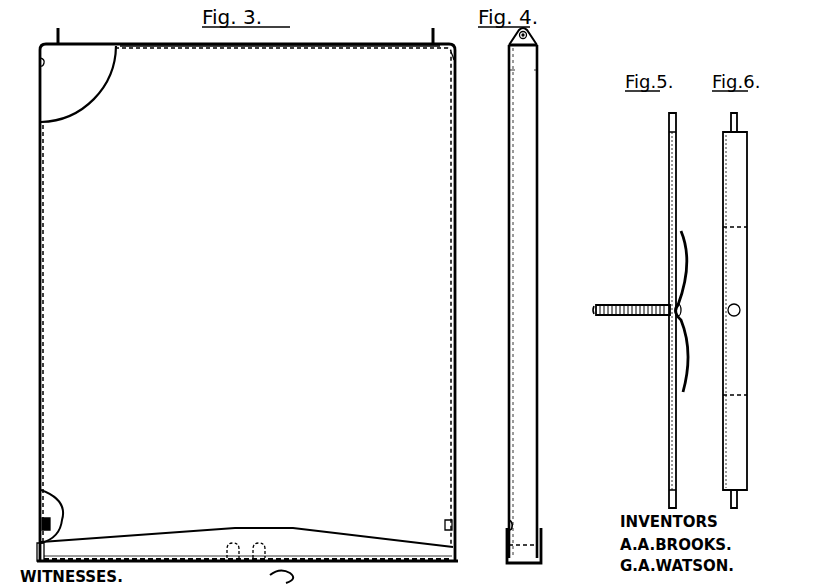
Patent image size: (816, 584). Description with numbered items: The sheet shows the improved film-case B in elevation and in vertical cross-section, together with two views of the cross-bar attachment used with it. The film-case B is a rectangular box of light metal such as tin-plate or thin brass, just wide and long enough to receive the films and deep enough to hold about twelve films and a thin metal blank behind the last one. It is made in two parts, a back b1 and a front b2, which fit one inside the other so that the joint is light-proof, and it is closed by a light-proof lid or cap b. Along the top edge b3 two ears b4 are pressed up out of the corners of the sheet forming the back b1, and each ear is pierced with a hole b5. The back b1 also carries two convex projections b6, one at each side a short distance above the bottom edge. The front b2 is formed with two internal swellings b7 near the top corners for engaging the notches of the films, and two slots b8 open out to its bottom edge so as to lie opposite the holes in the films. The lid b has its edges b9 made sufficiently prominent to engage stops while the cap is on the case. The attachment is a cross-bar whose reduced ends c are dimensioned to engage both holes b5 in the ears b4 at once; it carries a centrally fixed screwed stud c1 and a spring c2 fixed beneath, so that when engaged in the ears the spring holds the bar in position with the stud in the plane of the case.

In FIG. 3, the film-case B is at (247, 302).
In FIG. 4, the film-case B is at (540, 248).
In FIG. 3, the light-proof lid or cap b is at (327, 559).
In FIG. 4, the light-proof lid or cap b is at (541, 556).
In FIG. 4, the back of the film-case b1 is at (538, 72).
In FIG. 3, the front of the film-case b2 is at (44, 90).
In FIG. 4, the front of the film-case b2 is at (508, 79).
In FIG. 3, the top edge of the film-case b3 is at (342, 45).
In FIG. 3, the ears b4 is at (61, 31).
In FIG. 4, the ears b4 is at (534, 38).
In FIG. 4, the hole b5 is at (512, 38).
In FIG. 3, the convex projections b6 is at (58, 522).
In FIG. 4, the convex projections b6 is at (514, 524).
In FIG. 3, the internal swellings b7 is at (449, 56).
In FIG. 3, the slots b8 is at (232, 542).
In FIG. 3, the edges of the lid b9 is at (355, 534).
In FIG. 5, the reduced ends of the cross-bar c is at (668, 208).
In FIG. 6, the reduced ends of the cross-bar c is at (738, 212).
In FIG. 5, the screwed stud c1 is at (629, 305).
In FIG. 6, the screwed stud c1 is at (741, 310).
In FIG. 5, the spring c2 is at (690, 352).
In FIG. 6, the spring c2 is at (745, 394).